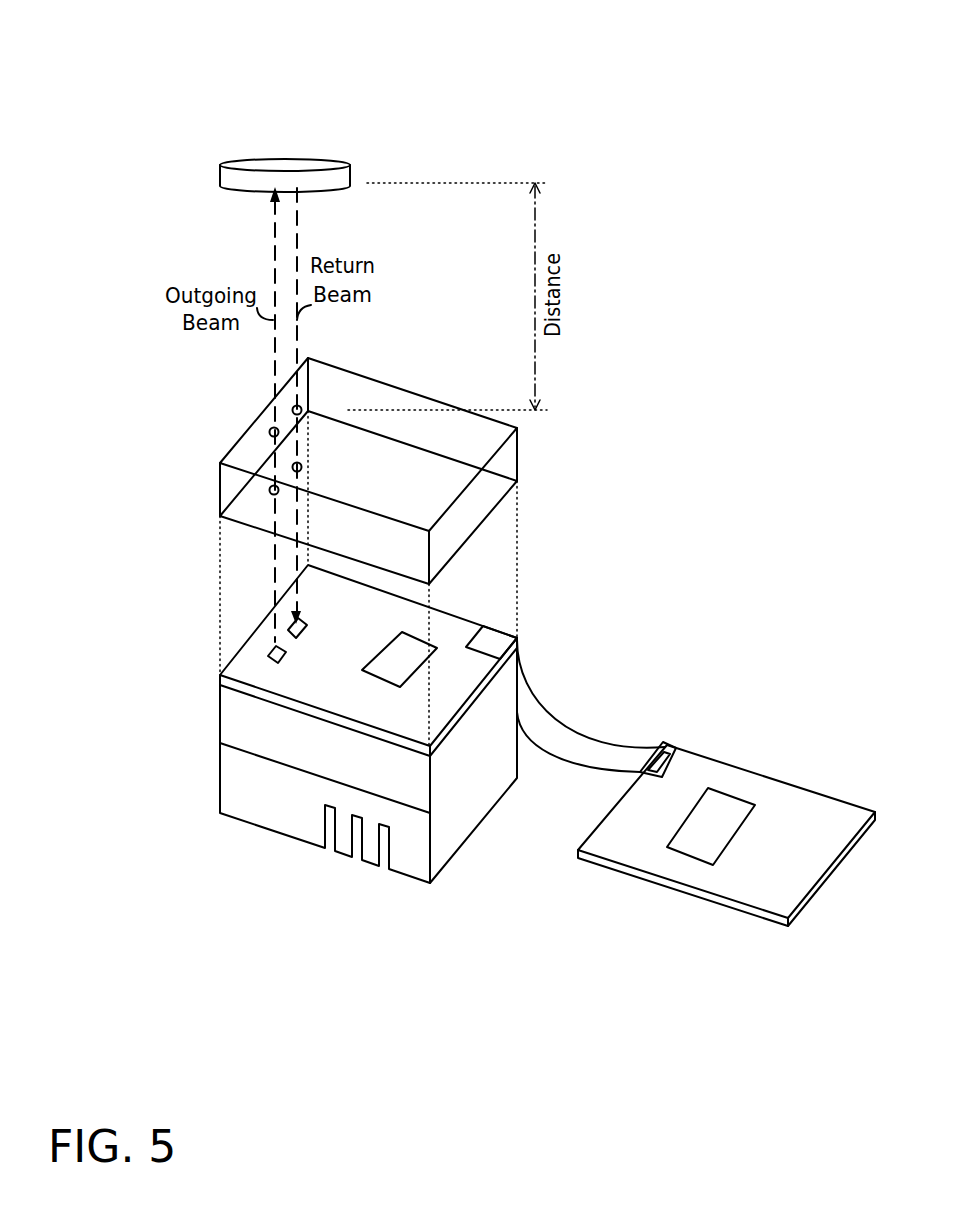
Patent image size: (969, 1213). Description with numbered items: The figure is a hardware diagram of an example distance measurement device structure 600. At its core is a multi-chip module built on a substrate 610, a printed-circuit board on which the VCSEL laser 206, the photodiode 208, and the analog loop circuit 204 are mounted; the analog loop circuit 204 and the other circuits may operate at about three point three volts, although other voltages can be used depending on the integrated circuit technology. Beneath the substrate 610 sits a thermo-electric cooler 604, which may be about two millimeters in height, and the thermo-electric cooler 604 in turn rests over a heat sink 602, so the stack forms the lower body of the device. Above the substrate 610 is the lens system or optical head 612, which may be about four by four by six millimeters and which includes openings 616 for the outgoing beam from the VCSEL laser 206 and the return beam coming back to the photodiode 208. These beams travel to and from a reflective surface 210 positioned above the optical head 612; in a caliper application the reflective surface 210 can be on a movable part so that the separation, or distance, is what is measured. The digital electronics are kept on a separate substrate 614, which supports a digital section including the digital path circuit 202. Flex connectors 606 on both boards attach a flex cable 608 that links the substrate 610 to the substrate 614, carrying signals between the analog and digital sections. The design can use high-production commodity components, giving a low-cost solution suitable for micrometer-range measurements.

The distance measurement device structure 600 is at (808, 42).
The reflective surface 210 is at (350, 176).
The optical head 612 is at (408, 487).
The openings 616 is at (269, 432).
The photodiode 208 is at (301, 620).
The VCSEL laser 206 is at (285, 657).
The analog loop circuit 204 is at (387, 672).
The substrate 610 is at (220, 676).
The thermo-electric cooler 604 is at (333, 756).
The heat sink 602 is at (291, 809).
The flex connectors 606 is at (495, 642).
The flex cable 608 is at (563, 735).
The digital path circuit 202 is at (734, 822).
The substrate 614 is at (578, 851).